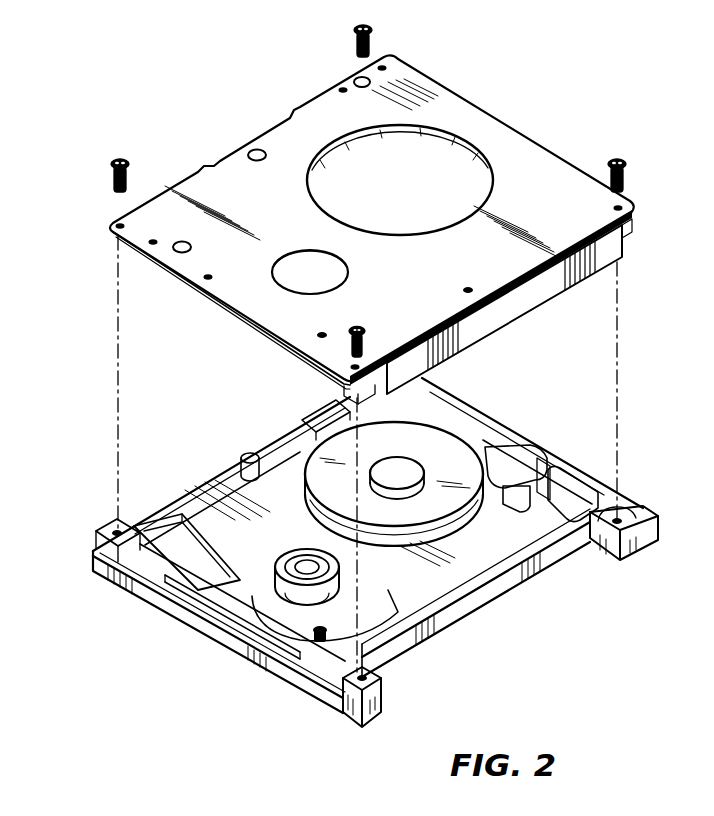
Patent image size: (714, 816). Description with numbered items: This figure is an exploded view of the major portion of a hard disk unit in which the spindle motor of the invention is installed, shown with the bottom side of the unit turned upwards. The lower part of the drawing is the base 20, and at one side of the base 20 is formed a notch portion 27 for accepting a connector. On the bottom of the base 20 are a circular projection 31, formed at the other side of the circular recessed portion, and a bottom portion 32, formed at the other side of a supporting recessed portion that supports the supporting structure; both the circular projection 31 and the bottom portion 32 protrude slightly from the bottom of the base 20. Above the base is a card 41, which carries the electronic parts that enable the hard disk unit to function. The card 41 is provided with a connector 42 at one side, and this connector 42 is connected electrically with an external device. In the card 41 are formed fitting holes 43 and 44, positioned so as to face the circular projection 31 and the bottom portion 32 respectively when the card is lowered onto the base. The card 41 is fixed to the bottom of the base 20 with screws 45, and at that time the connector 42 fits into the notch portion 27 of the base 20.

The base 20 is at (490, 590).
The notch portion 27 is at (607, 558).
The circular projection 31 is at (443, 450).
The bottom portion 32 is at (267, 580).
The card 41 is at (565, 183).
The connector 42 is at (548, 282).
The fitting hole 43 is at (445, 172).
The fitting hole 44 is at (307, 272).
The screws 45 is at (112, 172).